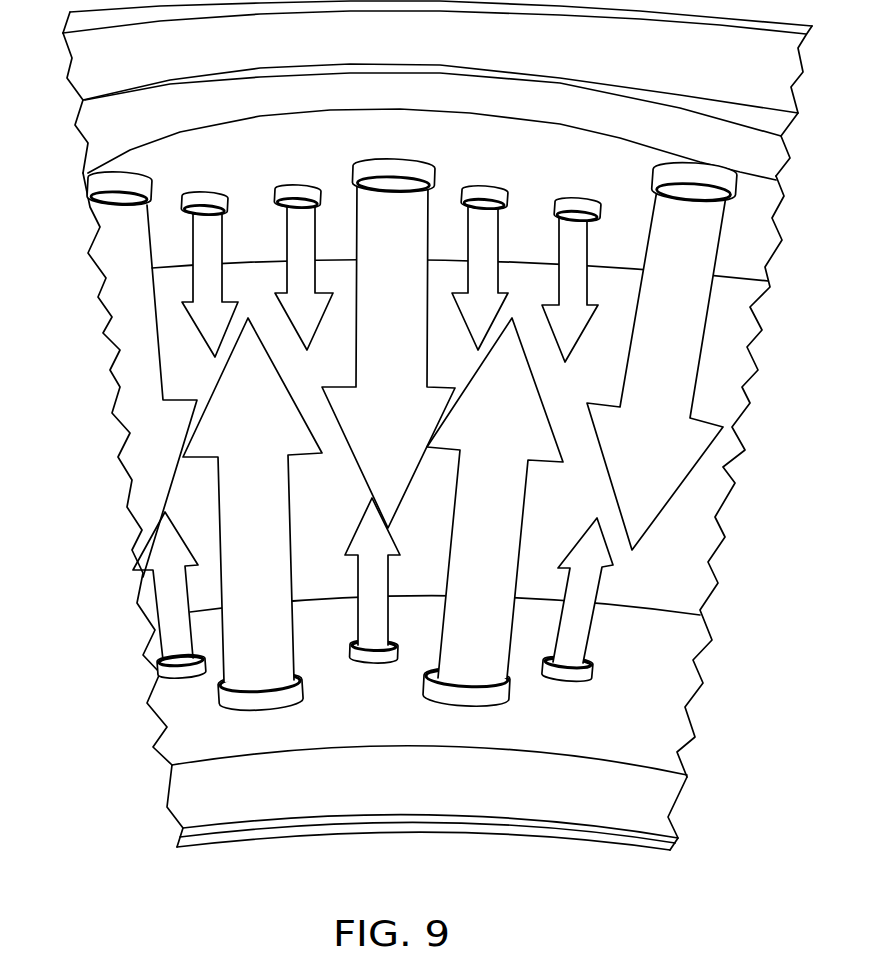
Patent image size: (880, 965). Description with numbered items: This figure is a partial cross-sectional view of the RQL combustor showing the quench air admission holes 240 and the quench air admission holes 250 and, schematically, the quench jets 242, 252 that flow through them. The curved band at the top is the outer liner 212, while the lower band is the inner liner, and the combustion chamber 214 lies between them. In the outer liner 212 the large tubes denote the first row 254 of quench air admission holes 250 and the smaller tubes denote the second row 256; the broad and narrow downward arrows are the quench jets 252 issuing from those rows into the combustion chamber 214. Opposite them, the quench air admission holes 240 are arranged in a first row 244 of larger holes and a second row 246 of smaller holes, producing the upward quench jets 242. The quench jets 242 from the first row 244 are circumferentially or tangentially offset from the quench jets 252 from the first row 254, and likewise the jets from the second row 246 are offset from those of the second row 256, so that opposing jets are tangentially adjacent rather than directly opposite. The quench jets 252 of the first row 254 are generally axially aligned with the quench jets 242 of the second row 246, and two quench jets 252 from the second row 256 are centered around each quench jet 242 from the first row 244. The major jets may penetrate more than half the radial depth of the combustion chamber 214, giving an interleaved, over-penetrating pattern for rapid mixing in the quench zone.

The outer liner 212 is at (170, 740).
The combustion chamber 214 is at (588, 509).
The quench air admission holes 240 is at (233, 746).
The quench jets 242 is at (167, 598).
The first row 244 is at (273, 699).
The second row 246 is at (377, 661).
The quench air admission holes 250 is at (242, 128).
The quench jets 252 is at (291, 267).
The first row 254 is at (92, 182).
The second row 256 is at (194, 196).